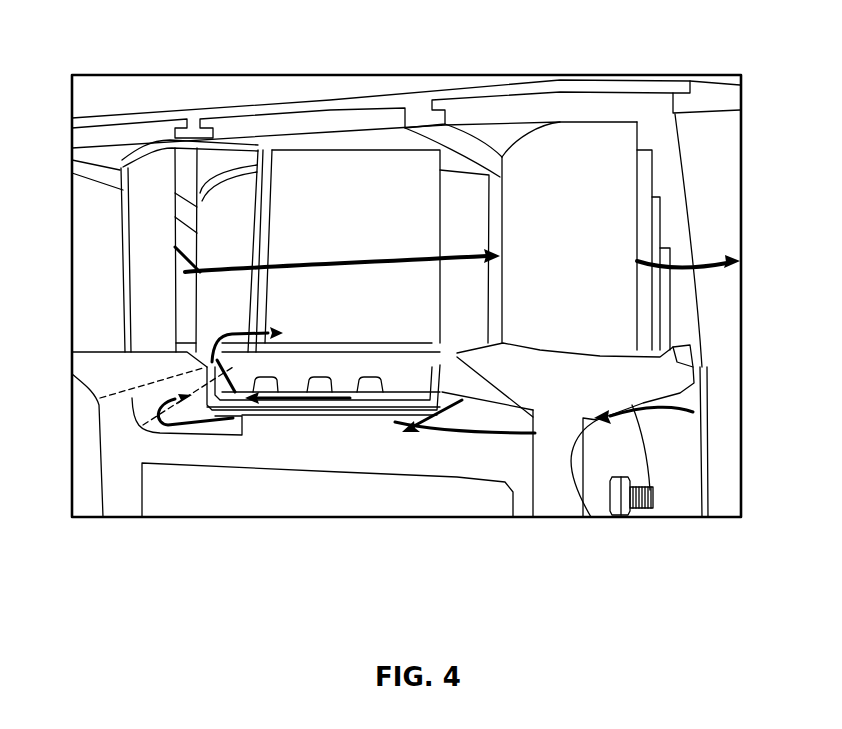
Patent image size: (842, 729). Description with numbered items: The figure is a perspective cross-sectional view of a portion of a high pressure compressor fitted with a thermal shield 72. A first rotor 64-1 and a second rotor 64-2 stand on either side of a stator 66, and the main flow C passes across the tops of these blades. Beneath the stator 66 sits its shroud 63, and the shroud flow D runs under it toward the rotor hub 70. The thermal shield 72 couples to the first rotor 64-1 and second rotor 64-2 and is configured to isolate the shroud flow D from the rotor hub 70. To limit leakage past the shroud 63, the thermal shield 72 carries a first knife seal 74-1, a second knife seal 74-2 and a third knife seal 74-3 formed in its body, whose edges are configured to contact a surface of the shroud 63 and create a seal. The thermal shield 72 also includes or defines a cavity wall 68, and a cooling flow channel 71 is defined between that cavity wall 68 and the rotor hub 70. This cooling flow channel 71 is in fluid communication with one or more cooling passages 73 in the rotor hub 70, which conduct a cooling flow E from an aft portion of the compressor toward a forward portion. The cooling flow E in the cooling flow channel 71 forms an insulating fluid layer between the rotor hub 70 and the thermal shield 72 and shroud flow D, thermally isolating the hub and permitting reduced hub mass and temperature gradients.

The shroud 63 is at (240, 362).
The first rotor 64-1 is at (140, 193).
The second rotor 64-2 is at (620, 177).
The stator 66 is at (355, 165).
The cavity wall 68 is at (200, 433).
The rotor hub 70 is at (525, 482).
The cooling flow channel 71 is at (232, 435).
The thermal shield 72 is at (450, 403).
The cooling passage 73 is at (591, 517).
The first knife seal 74-1 is at (267, 392).
The second knife seal 74-2 is at (368, 392).
The third knife seal 74-3 is at (388, 392).
The core flow C is at (705, 263).
The shroud flow D is at (320, 390).
The cooling flow E is at (693, 412).